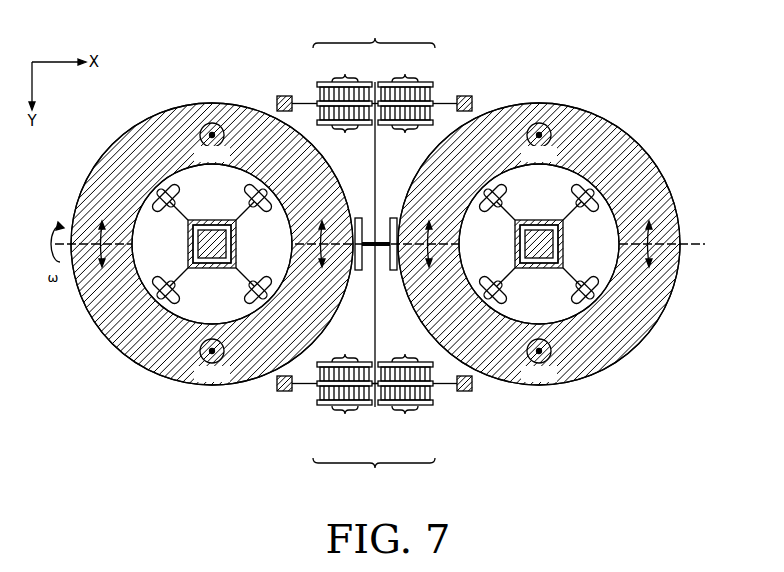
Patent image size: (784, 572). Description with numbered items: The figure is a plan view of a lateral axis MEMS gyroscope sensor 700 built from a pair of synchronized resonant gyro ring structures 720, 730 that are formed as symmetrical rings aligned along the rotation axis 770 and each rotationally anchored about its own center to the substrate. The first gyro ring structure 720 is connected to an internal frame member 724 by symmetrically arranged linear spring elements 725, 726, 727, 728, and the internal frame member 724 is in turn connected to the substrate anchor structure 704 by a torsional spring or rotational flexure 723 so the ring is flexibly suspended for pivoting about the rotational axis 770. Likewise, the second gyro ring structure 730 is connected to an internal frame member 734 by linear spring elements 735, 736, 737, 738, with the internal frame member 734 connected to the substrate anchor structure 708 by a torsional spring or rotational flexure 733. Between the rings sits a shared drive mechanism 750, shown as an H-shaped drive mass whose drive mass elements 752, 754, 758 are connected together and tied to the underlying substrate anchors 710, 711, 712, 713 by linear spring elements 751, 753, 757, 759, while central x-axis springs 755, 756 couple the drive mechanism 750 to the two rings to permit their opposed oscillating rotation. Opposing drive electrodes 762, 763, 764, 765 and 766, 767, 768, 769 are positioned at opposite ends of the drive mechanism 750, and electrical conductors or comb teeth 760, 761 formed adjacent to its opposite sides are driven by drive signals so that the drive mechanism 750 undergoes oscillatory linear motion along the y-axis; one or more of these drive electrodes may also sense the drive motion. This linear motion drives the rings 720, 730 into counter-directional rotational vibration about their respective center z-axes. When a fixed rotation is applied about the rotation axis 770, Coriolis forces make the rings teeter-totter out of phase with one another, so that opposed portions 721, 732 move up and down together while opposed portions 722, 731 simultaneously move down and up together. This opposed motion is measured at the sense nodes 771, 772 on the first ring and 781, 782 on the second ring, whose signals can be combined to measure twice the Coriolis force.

The lateral axis MEMS gyroscope sensor 700 is at (654, 54).
The substrate anchor structure 704 is at (208, 225).
The substrate anchor structure 708 is at (535, 225).
The substrate anchor 710 is at (280, 95).
The substrate anchor 711 is at (470, 95).
The substrate anchor 712 is at (280, 392).
The substrate anchor 713 is at (472, 391).
The first gyro ring structure 720 is at (197, 242).
The opposed portion of ring-shaped sense mass 721 is at (212, 262).
The opposed portion of ring-shaped sense mass 722 is at (212, 224).
The torsional spring or rotational flexure 723 is at (212, 261).
The internal frame member 724 is at (234, 240).
The linear spring element 725 is at (243, 202).
The linear spring element 726 is at (171, 205).
The linear spring element 727 is at (171, 283).
The linear spring element 728 is at (253, 283).
The second gyro ring structure 730 is at (553, 242).
The opposed portion of ring-shaped sense mass 731 is at (539, 262).
The opposed portion of ring-shaped sense mass 732 is at (539, 224).
The torsional spring or rotational flexure 733 is at (539, 261).
The internal frame member 734 is at (561, 240).
The linear spring element 735 is at (570, 202).
The linear spring element 736 is at (498, 205).
The linear spring element 737 is at (498, 283).
The linear spring element 738 is at (580, 283).
The drive mechanism 750 is at (368, 439).
The linear spring element 751 is at (307, 101).
The drive mass element 752 is at (376, 86).
The linear spring element 753 is at (446, 101).
The drive mass element 754 is at (376, 202).
The central x-axis spring 755 is at (360, 270).
The central x-axis spring 756 is at (392, 270).
The linear spring element 757 is at (305, 386).
The drive mass element 758 is at (375, 407).
The linear spring element 759 is at (445, 386).
The electrical conductors or comb teeth 760 is at (378, 86).
The electrical conductors or comb teeth 761 is at (378, 410).
The drive electrode 762 is at (345, 76).
The drive electrode 763 is at (405, 76).
The drive electrode 764 is at (344, 131).
The drive electrode 765 is at (405, 131).
The drive electrode 766 is at (344, 355).
The drive electrode 767 is at (405, 355).
The drive electrode 768 is at (344, 410).
The drive electrode 769 is at (405, 410).
The rotation axis 770 is at (698, 244).
The sense node 771 is at (189, 351).
The sense node 772 is at (189, 135).
The sense node 781 is at (516, 351).
The sense node 782 is at (516, 135).